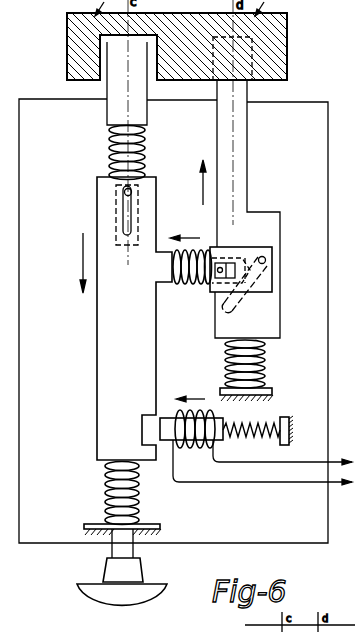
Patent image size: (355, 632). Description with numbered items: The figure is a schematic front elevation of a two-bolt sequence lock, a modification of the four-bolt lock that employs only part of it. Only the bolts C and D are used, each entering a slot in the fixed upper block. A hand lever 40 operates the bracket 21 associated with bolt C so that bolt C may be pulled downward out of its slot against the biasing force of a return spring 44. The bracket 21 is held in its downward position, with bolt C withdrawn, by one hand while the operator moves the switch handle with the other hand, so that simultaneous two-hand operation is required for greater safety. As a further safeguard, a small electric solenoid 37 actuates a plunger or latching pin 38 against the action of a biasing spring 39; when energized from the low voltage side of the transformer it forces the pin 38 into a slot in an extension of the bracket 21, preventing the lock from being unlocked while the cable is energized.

The bracket 21 is at (143, 362).
The small electric solenoid 37 is at (195, 441).
The plunger or latching pin 38 is at (166, 434).
The biasing spring 39 is at (258, 440).
The hand lever 40 is at (108, 563).
The return spring 44 is at (107, 496).
The bolt C is at (107, 117).
The bolt D is at (241, 124).